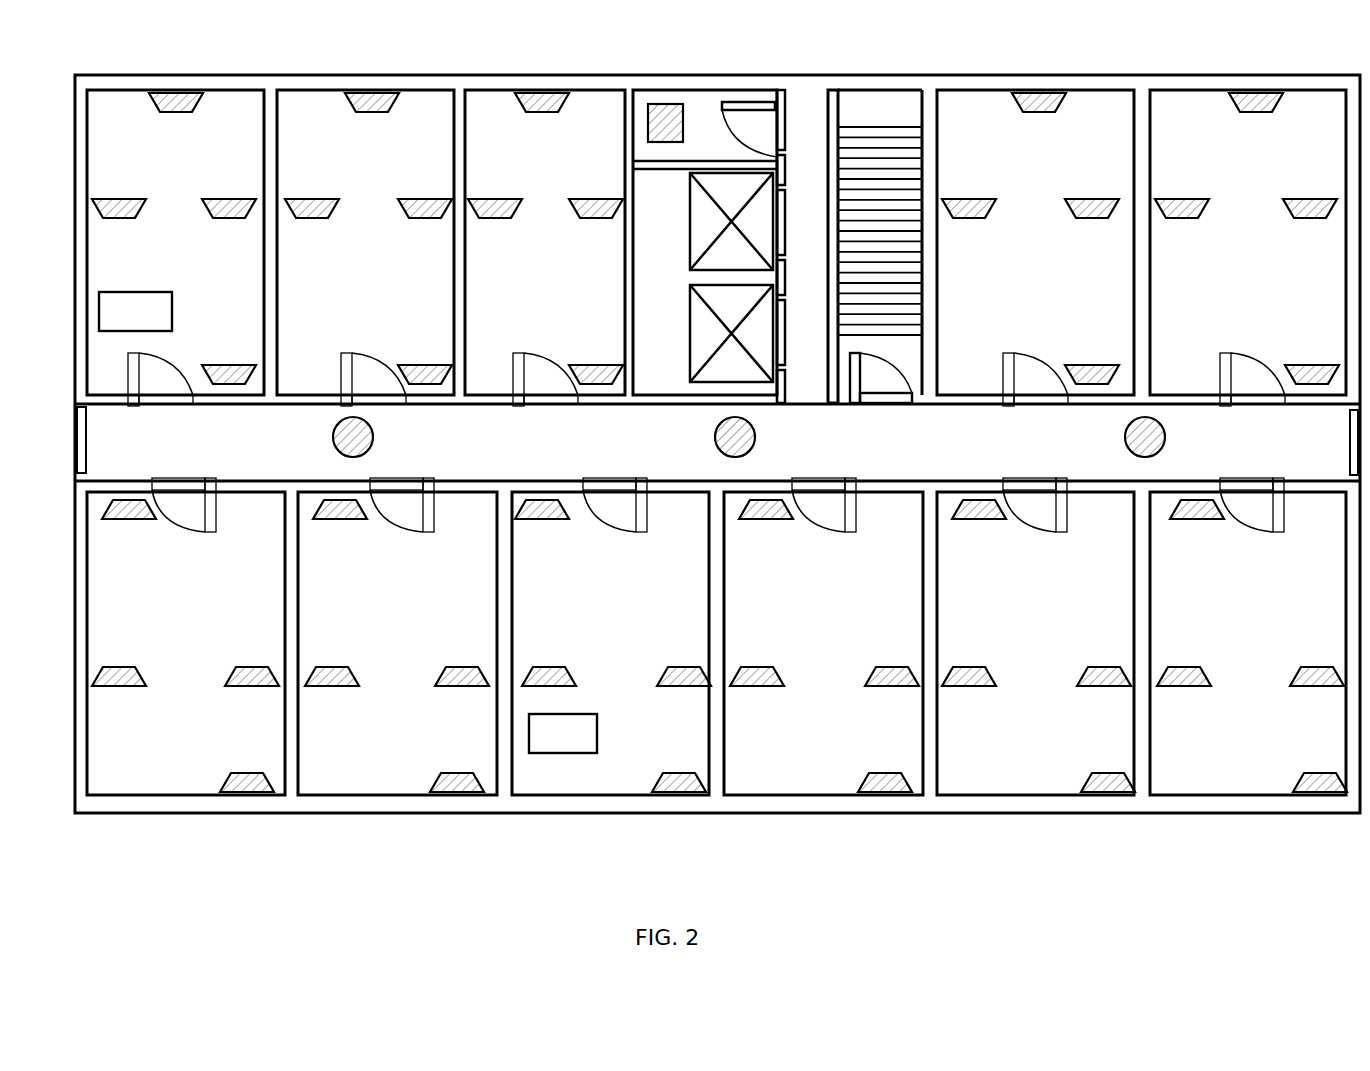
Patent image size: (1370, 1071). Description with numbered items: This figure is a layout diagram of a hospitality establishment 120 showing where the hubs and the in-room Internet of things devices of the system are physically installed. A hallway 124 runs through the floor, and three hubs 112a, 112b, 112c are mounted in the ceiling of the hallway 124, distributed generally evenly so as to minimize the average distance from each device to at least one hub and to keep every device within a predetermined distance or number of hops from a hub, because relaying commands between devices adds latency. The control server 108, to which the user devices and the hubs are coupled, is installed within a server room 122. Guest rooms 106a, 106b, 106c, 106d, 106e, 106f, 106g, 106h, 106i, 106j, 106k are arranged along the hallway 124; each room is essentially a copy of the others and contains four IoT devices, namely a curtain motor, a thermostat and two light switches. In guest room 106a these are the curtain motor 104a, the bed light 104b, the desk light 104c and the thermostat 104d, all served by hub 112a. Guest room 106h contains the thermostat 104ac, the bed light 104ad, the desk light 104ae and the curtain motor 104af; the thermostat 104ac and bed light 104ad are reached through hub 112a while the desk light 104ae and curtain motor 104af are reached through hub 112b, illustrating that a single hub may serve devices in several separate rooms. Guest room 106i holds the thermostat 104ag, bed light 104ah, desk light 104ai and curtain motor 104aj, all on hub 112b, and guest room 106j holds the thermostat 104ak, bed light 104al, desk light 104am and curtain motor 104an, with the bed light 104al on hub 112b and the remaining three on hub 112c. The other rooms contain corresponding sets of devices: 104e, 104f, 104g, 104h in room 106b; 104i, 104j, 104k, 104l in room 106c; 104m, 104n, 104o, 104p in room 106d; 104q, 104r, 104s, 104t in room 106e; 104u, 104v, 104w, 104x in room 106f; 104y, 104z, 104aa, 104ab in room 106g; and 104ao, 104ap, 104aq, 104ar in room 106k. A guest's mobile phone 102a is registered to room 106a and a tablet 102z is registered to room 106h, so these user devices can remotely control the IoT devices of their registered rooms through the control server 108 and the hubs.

The user device 102a is at (163, 325).
The user device 102z is at (590, 747).
The curtain motor 104a is at (160, 113).
The bed light 104b is at (108, 219).
The desk light 104c is at (222, 219).
The thermostat 104d is at (237, 364).
The light fixture 104e is at (356, 113).
The light fixture 104f is at (301, 219).
The light fixture 104g is at (418, 219).
The light fixture 104h is at (443, 364).
The light fixture 104i is at (526, 113).
The light fixture 104j is at (484, 219).
The light fixture 104k is at (592, 219).
The light fixture 104l is at (597, 364).
The light fixture 104m is at (1023, 113).
The light fixture 104n is at (960, 219).
The light fixture 104o is at (1090, 219).
The light fixture 104p is at (1095, 364).
The light fixture 104q is at (1240, 113).
The light fixture 104r is at (1175, 219).
The light fixture 104s is at (1307, 219).
The light fixture 104t is at (1305, 364).
The light fixture 104u is at (123, 520).
The light fixture 104v is at (122, 667).
The light fixture 104w is at (248, 667).
The light fixture 104x is at (238, 773).
The light fixture 104y is at (335, 520).
The light fixture 104z is at (325, 667).
The light fixture 104aa is at (458, 667).
The light fixture 104ab is at (448, 773).
The thermostat 104ac is at (540, 520).
The bed light 104ad is at (567, 648).
The desk light 104ae is at (668, 667).
The curtain motor 104af is at (664, 773).
The thermostat 104ag is at (765, 520).
The bed light 104ah is at (767, 667).
The desk light 104ai is at (877, 667).
The curtain motor 104aj is at (871, 773).
The thermostat 104ak is at (977, 520).
The bed light 104al is at (980, 667).
The desk light 104am is at (1103, 667).
The curtain motor 104an is at (1094, 773).
The light fixture 104ao is at (1197, 520).
The light fixture 104ap is at (1196, 667).
The light fixture 104aq is at (1303, 667).
The light fixture 104ar is at (1306, 773).
The guest room 106a is at (203, 245).
The room 106b is at (406, 245).
The room 106c is at (583, 245).
The room 106d is at (1068, 245).
The room 106e is at (1281, 245).
The room 106f is at (258, 595).
The room 106g is at (486, 595).
The guest room 106h is at (691, 595).
The guest room 106i is at (888, 593).
The guest room 106j is at (1106, 593).
The room 106k is at (1316, 595).
The control server 108 is at (668, 104).
The hub 112a is at (373, 440).
The hub 112b is at (755, 440).
The hub 112c is at (1165, 440).
The hospitality establishment 120 is at (1085, 813).
The server room 122 is at (731, 152).
The hallway 124 is at (613, 465).